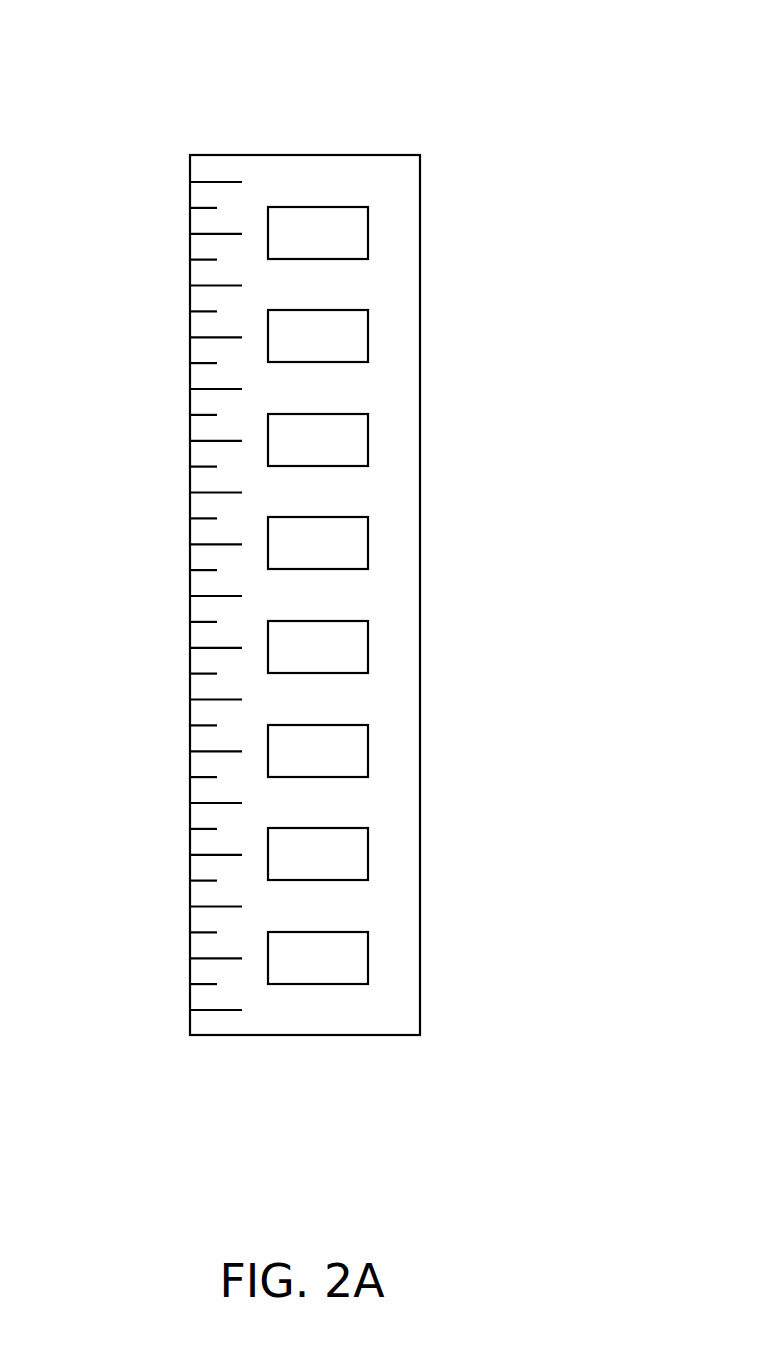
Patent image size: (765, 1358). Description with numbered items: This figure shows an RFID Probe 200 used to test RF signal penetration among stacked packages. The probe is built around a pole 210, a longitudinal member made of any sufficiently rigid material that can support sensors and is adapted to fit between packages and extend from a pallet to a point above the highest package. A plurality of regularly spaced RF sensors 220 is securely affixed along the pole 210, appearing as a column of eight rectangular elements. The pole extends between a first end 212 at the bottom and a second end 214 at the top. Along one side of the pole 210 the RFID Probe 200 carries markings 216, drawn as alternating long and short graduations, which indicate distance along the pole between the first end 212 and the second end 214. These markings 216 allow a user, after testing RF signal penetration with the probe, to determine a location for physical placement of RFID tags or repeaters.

The RFID Probe 200 is at (268, 125).
The pole 210 is at (367, 1026).
The first end 212 is at (293, 1036).
The second end 214 is at (376, 155).
The markings 216 is at (155, 154).
The RF sensors 220 is at (292, 351).